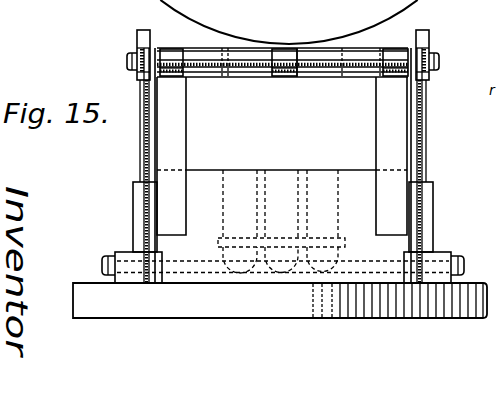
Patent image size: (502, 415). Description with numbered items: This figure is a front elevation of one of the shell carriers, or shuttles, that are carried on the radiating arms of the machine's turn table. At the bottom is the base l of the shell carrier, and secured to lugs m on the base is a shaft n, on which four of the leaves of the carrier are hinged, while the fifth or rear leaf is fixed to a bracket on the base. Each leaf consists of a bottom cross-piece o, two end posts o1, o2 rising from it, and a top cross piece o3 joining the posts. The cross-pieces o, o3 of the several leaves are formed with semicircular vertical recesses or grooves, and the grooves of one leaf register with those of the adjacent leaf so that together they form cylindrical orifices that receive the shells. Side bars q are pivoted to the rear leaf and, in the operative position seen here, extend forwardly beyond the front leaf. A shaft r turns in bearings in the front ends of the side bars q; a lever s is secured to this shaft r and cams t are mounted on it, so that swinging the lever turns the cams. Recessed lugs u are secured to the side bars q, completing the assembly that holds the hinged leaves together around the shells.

The side bars q is at (136, 39).
The lever s is at (127, 62).
The recessed lugs u is at (152, 83).
The cams t is at (175, 63).
The shaft r is at (353, 63).
The top cross piece o3 is at (239, 68).
The end post o1 is at (171, 156).
The end post o2 is at (391, 156).
The bottom cross-piece o is at (282, 162).
The shaft n is at (351, 265).
The lugs m is at (124, 253).
The base l is at (280, 300).